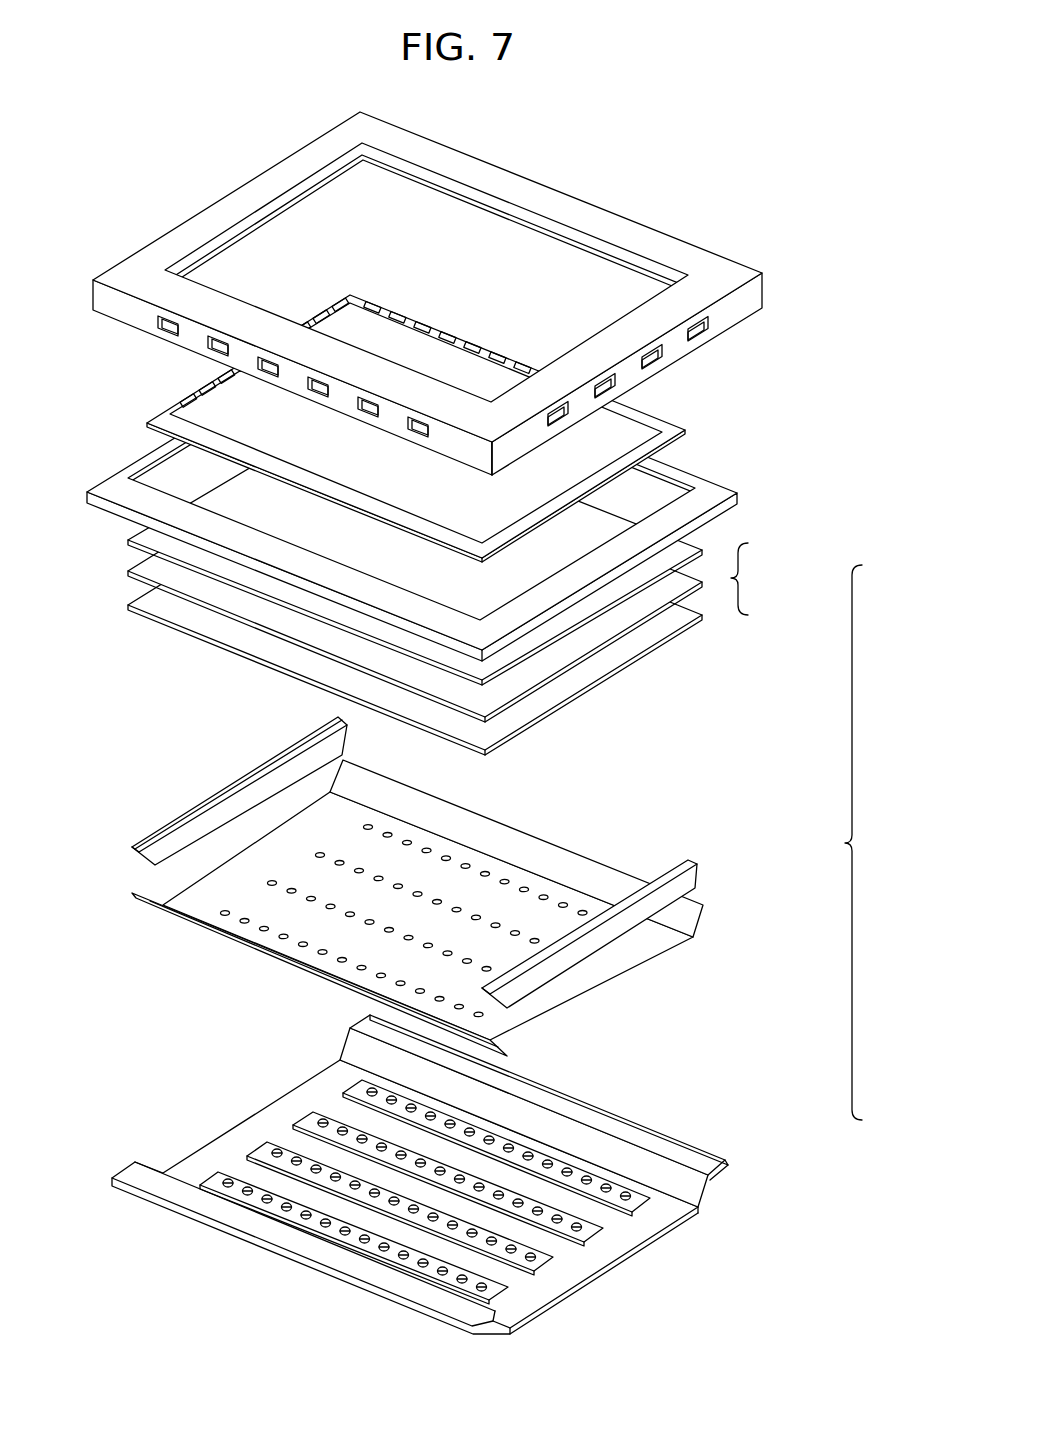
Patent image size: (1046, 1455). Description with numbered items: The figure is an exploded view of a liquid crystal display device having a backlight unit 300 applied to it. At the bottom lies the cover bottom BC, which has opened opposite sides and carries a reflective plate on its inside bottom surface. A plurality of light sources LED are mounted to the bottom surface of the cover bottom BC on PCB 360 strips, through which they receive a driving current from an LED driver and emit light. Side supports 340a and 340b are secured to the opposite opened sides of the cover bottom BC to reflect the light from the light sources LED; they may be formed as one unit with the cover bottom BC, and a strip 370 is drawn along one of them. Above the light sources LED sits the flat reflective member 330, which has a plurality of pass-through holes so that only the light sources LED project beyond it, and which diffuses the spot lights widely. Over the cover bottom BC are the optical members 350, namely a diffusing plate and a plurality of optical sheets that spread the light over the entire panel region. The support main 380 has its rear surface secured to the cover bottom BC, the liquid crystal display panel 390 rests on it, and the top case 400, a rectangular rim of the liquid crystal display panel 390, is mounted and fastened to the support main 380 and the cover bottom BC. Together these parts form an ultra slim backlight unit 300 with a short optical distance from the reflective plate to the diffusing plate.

The backlight unit 300 is at (891, 842).
The flat reflective member 330 is at (535, 847).
The side support 340a is at (680, 885).
The side support 340b is at (167, 827).
The optical members 350 is at (473, 582).
The PCB 360 is at (543, 1258).
The reflective strip on side support 370 is at (227, 795).
The support main 380 is at (713, 488).
The liquid crystal display panel 390 is at (670, 428).
The top case 400 is at (688, 262).
The light source LED is at (547, 1163).
The cover bottom BC is at (653, 1217).